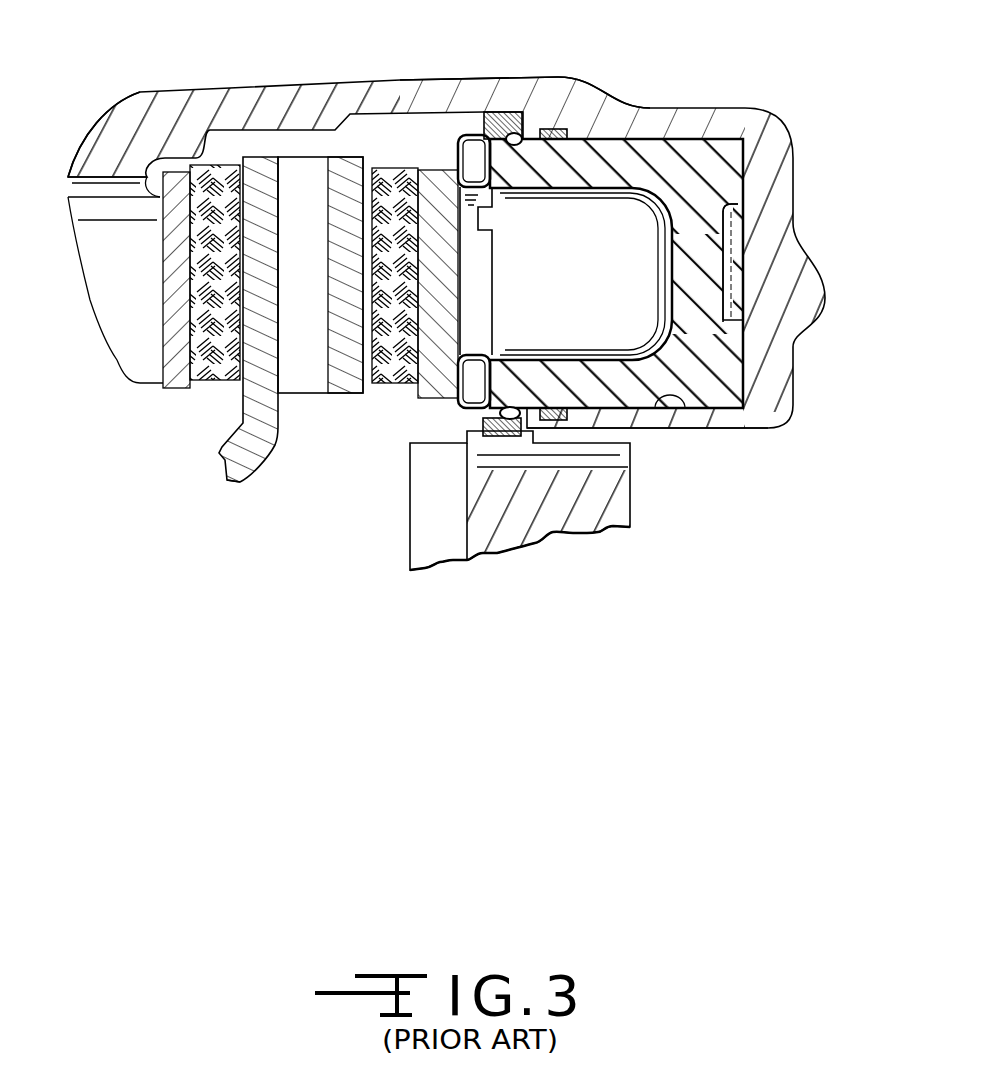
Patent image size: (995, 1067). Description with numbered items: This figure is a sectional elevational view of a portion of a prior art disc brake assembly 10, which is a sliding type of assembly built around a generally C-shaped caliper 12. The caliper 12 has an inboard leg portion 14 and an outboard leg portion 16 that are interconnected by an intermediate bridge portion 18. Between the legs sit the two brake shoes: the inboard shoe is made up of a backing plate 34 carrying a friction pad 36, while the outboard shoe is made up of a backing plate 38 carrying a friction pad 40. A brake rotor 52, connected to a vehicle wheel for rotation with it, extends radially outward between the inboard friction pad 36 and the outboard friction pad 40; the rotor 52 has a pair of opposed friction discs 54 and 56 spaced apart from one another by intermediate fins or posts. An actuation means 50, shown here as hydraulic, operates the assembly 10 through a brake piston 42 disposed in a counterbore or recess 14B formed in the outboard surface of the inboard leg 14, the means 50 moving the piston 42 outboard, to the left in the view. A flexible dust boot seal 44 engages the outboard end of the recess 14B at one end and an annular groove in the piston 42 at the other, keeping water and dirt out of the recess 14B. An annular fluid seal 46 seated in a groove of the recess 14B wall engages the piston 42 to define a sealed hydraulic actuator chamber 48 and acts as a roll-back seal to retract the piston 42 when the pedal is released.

The prior art disc brake assembly 10 is at (785, 75).
The caliper 12 is at (140, 92).
The inboard leg portion 14 is at (668, 123).
The recess 14B is at (690, 410).
The outboard leg portion 16 is at (108, 293).
The intermediate bridge portion 18 is at (543, 90).
The backing plate 34 is at (435, 190).
The friction pad 36 is at (393, 173).
The backing plate 38 is at (175, 389).
The friction pad 40 is at (213, 382).
The brake piston 42 is at (717, 397).
The dust boot seal 44 is at (482, 414).
The annular fluid seal 46 is at (540, 413).
The sealed hydraulic actuator chamber 48 is at (740, 248).
The actuation means 50 is at (725, 210).
The brake rotor 52 is at (256, 477).
The friction disc 54 is at (347, 173).
The friction disc 56 is at (263, 167).